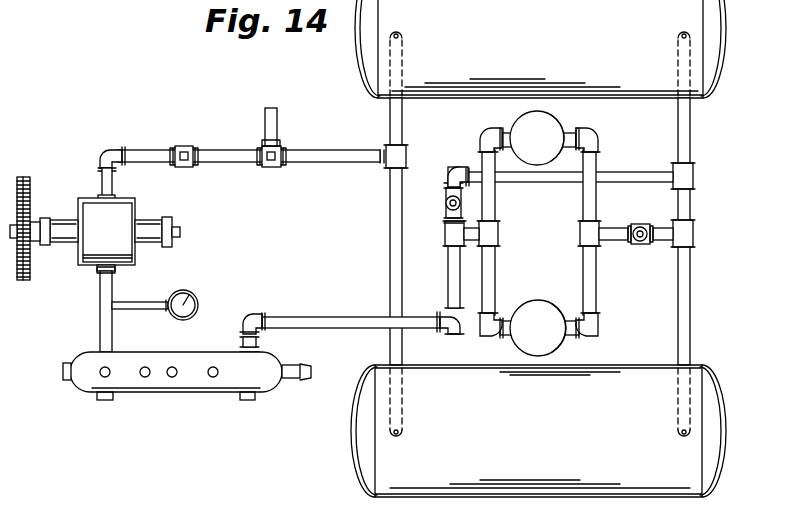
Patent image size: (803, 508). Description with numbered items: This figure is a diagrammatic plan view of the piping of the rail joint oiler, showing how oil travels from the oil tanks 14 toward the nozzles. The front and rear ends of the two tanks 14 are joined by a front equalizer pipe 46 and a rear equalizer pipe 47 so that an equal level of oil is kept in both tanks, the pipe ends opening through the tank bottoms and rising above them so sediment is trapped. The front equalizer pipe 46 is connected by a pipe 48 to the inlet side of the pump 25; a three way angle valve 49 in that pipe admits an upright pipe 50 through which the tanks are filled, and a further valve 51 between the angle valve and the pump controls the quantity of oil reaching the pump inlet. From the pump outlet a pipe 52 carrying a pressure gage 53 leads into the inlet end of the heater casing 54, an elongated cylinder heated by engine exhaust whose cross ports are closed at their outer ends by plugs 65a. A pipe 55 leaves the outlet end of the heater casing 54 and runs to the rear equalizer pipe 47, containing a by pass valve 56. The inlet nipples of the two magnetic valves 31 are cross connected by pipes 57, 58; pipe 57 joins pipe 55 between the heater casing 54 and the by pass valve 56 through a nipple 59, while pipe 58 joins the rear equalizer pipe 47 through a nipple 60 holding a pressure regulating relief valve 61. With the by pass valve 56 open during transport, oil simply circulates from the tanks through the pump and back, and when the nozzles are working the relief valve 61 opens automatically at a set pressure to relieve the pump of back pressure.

The oil tank 14 is at (703, 394).
The pump 25 is at (128, 200).
The magnetic valve 31 is at (559, 125).
The front equalizer pipe 46 is at (390, 208).
The rear equalizer pipe 47 is at (694, 256).
The pipe 48 is at (332, 155).
The three way angle valve 49 is at (269, 168).
The upright pipe 50 is at (271, 138).
The valve 51 is at (199, 135).
The pipe 52 is at (100, 290).
The pressure gage 53 is at (173, 297).
The heater casing 54 is at (81, 351).
The pipe 55 is at (414, 317).
The by pass valve 56 is at (445, 204).
The pipe 57 is at (497, 265).
The pipe 58 is at (599, 280).
The nipple 59 is at (465, 246).
The nipple 60 is at (613, 228).
The pressure regulating relief valve 61 is at (635, 245).
The plug 65a is at (211, 368).